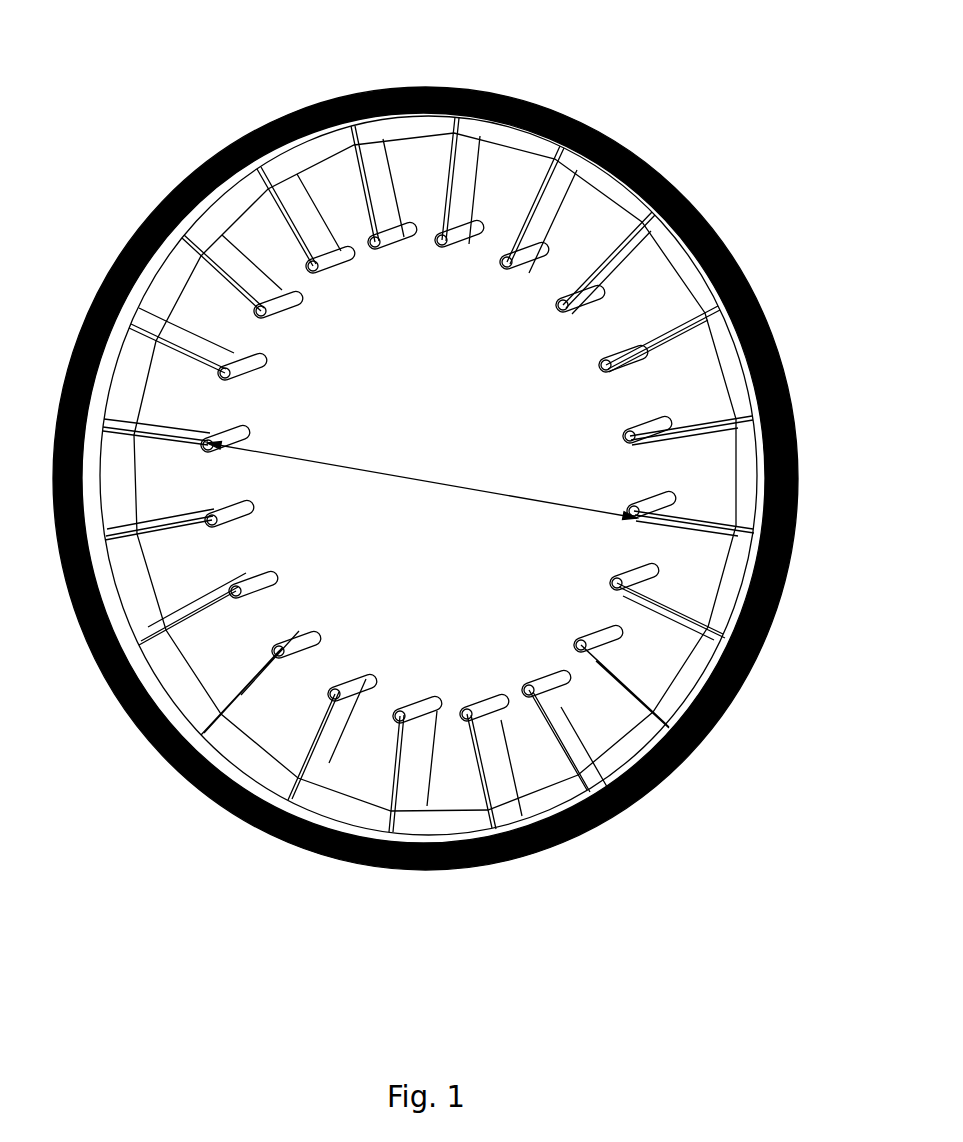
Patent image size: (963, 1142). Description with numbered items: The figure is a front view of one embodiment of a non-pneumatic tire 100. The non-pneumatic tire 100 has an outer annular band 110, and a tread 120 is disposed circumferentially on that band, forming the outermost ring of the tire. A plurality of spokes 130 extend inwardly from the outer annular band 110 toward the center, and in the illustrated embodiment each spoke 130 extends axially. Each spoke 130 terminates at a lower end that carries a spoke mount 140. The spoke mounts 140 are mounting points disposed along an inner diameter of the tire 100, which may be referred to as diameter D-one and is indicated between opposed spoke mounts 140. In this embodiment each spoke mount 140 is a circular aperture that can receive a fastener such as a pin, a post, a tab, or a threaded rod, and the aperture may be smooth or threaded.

The non-pneumatic tire 100 is at (686, 82).
The outer annular band 110 is at (428, 475).
The tread 120 is at (462, 478).
The spoke 130 is at (428, 474).
The spoke mount 140 is at (588, 643).